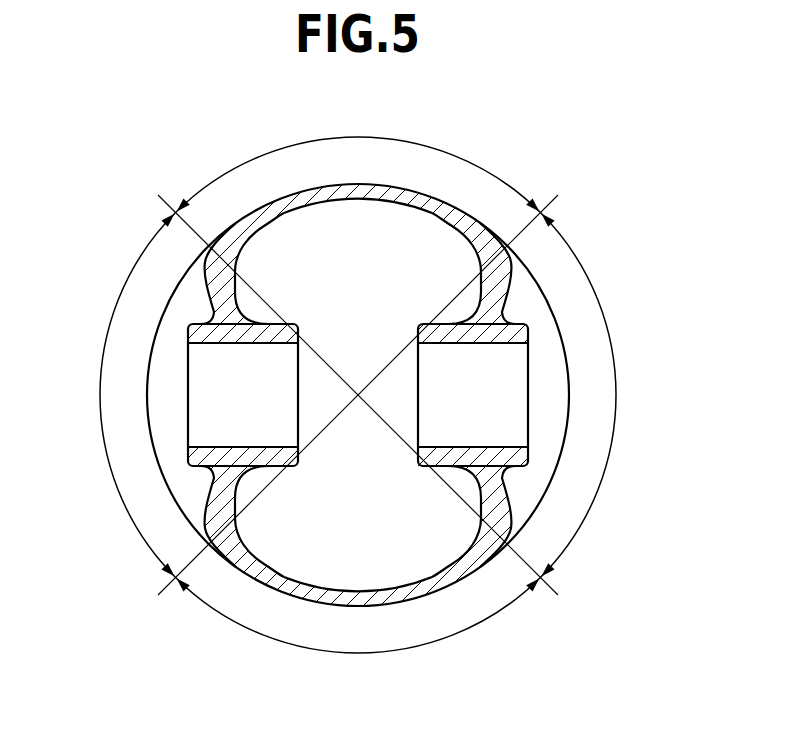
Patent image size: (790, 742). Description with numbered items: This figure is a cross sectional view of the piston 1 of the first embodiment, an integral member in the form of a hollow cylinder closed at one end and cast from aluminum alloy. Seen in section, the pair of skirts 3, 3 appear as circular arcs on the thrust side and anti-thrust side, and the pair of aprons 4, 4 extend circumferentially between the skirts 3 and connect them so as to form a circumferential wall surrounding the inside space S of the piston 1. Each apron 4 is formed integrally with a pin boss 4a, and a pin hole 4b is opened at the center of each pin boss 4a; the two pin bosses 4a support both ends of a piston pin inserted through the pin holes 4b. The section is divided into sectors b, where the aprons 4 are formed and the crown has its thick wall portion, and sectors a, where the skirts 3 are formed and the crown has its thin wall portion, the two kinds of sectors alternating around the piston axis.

The piston 1 is at (586, 356).
The skirt 3 is at (437, 200).
The apron 4 is at (212, 280).
The pin boss 4a is at (200, 453).
The pin hole 4b is at (215, 352).
The inside space S is at (287, 552).
The sector a is at (358, 395).
The sector b is at (357, 395).